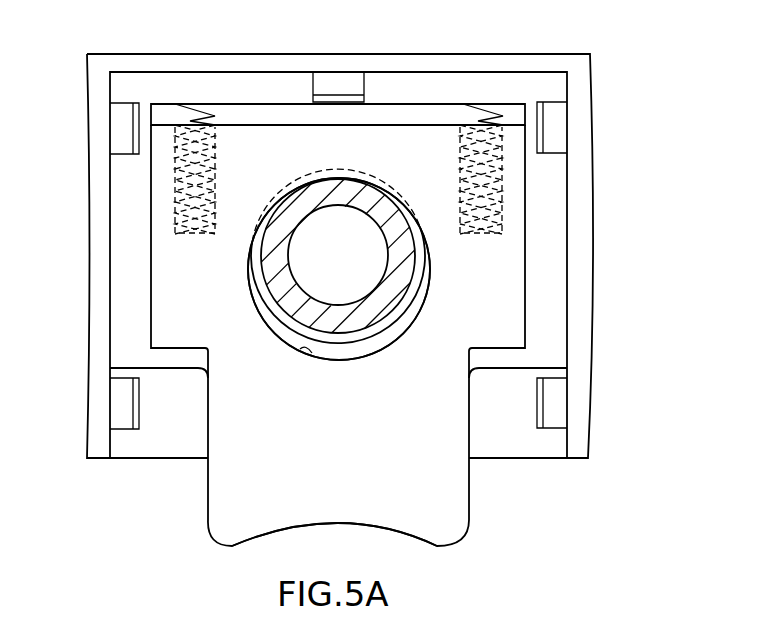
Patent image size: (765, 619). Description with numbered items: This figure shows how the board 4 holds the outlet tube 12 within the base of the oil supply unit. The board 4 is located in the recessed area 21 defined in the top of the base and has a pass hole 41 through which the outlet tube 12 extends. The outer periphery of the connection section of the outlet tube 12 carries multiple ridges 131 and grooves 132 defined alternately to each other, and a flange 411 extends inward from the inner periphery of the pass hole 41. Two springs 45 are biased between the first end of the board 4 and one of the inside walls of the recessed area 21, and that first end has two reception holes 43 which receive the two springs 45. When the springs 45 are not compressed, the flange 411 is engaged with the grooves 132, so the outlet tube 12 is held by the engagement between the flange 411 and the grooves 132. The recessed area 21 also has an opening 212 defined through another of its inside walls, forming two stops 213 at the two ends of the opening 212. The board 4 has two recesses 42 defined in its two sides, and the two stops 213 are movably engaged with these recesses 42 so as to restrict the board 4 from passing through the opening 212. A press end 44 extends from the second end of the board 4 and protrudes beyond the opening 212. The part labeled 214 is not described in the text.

The recessed area 21 is at (514, 110).
The opening 212 is at (470, 436).
The stops 213 is at (505, 371).
The upper retaining bracket 214 is at (553, 128).
The board 4 is at (140, 284).
The pass hole 41 is at (338, 352).
The flange 411 is at (302, 348).
The recesses 42 is at (178, 349).
The reception holes 43 is at (177, 204).
The press end 44 is at (367, 527).
The springs 45 is at (196, 103).
The outlet tube 12 is at (393, 283).
The ridges 131 is at (378, 344).
The grooves 132 is at (398, 311).